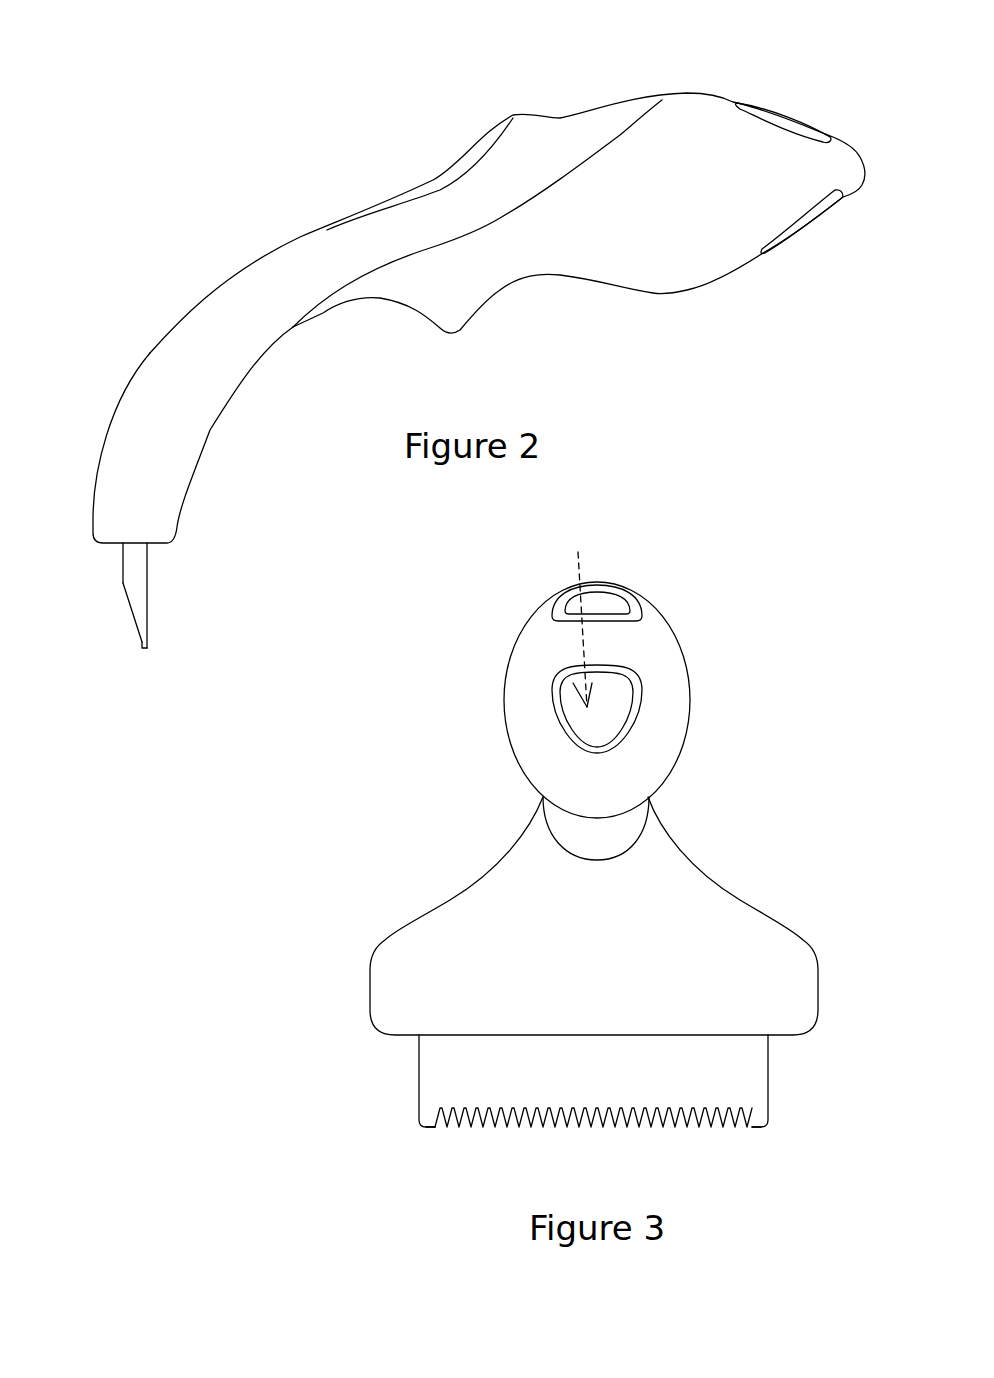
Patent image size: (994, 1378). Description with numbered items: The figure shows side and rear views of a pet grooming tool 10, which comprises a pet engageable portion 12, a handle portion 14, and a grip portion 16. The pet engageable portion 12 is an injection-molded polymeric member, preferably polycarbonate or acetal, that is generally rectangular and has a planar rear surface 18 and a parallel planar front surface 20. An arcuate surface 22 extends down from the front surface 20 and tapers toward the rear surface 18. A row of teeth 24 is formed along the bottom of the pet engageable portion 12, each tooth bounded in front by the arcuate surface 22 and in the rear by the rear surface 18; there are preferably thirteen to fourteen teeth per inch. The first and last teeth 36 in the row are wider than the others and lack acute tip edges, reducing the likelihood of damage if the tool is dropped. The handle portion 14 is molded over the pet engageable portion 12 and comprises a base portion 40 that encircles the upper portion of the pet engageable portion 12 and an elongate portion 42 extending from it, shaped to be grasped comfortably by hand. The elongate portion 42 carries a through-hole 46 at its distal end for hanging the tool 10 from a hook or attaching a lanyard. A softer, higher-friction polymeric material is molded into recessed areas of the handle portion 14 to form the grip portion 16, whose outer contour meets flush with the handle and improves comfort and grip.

In FIG. 2, the pet grooming tool 10 is at (370, 100).
In FIG. 3, the pet grooming tool 10 is at (443, 795).
In FIG. 2, the pet engageable portion 12 is at (150, 640).
In FIG. 3, the pet engageable portion 12 is at (589, 1111).
In FIG. 2, the handle portion 14 is at (180, 350).
In FIG. 3, the handle portion 14 is at (617, 602).
In FIG. 2, the grip portion 16 is at (487, 135).
In FIG. 3, the grip portion 16 is at (668, 683).
In FIG. 2, the rear surface 18 is at (148, 583).
In FIG. 3, the rear surface 18 is at (720, 1075).
In FIG. 2, the front surface 20 is at (122, 557).
In FIG. 2, the arcuate surface 22 is at (132, 605).
In FIG. 2, the teeth 24 is at (176, 689).
In FIG. 3, the teeth 24 is at (589, 1147).
In FIG. 2, the first and last teeth 36 is at (140, 648).
In FIG. 2, the base portion 40 is at (162, 513).
In FIG. 3, the base portion 40 is at (480, 1018).
In FIG. 2, the elongate portion 42 is at (317, 262).
In FIG. 3, the elongate portion 42 is at (560, 610).
In FIG. 3, the through-hole 46 is at (577, 616).